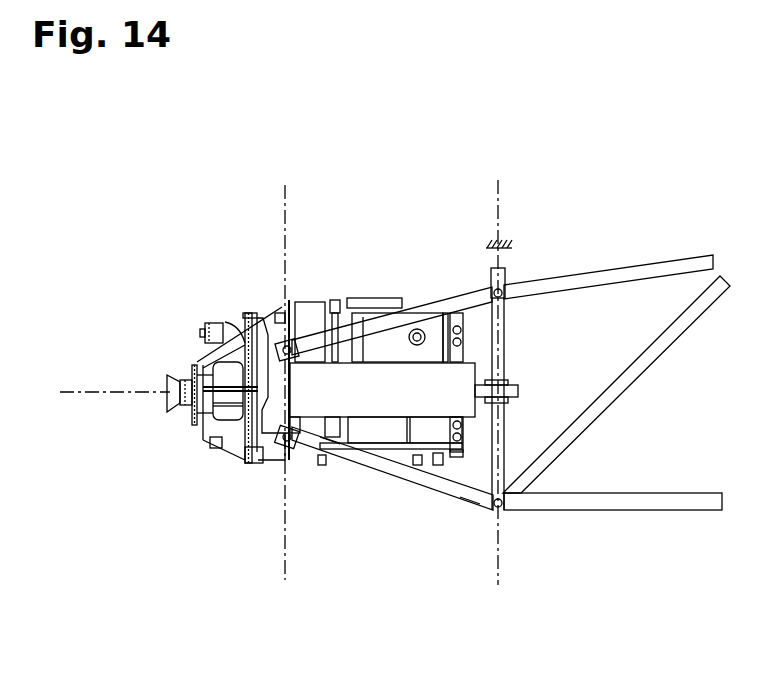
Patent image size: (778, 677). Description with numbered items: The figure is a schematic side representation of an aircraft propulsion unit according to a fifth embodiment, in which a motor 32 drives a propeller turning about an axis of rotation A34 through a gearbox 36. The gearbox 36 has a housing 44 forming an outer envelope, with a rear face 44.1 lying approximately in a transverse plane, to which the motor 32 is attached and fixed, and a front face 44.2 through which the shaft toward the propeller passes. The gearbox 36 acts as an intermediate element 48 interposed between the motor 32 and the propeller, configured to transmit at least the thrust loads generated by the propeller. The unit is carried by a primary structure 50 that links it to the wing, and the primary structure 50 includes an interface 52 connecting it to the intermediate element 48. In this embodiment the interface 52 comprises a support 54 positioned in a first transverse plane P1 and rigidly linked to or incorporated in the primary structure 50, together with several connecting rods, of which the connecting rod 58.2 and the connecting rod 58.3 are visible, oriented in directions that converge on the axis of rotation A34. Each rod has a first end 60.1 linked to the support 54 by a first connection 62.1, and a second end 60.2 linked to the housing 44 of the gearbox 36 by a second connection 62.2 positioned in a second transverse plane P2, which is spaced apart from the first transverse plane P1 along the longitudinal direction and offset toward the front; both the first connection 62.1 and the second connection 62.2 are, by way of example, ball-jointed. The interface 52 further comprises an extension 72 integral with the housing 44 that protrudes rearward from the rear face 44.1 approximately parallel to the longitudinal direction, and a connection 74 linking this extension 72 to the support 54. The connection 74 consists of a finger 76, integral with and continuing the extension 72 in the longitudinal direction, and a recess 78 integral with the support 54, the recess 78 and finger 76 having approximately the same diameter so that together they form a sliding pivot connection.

The motor 32 is at (373, 298).
The gearbox 36 is at (260, 467).
The housing 44 is at (227, 325).
The rear face 44.1 is at (307, 298).
The front face 44.2 is at (167, 383).
The intermediate element 48 is at (217, 458).
The primary structure 50 is at (507, 233).
The interface 52 is at (478, 277).
The support 54 is at (511, 270).
The connecting rod 58.2 is at (450, 298).
The connecting rod 58.3 is at (452, 490).
The first end 60.1 is at (470, 497).
The second end 60.2 is at (340, 448).
The first connection 62.1 is at (505, 510).
The second connection 62.2 is at (297, 452).
The extension 72 is at (398, 402).
The connection 74 is at (530, 378).
The finger 76 is at (520, 387).
The recess 78 is at (500, 373).
The axis of rotation A34 is at (73, 396).
The first transverse plane P1 is at (486, 403).
The second transverse plane P2 is at (275, 392).